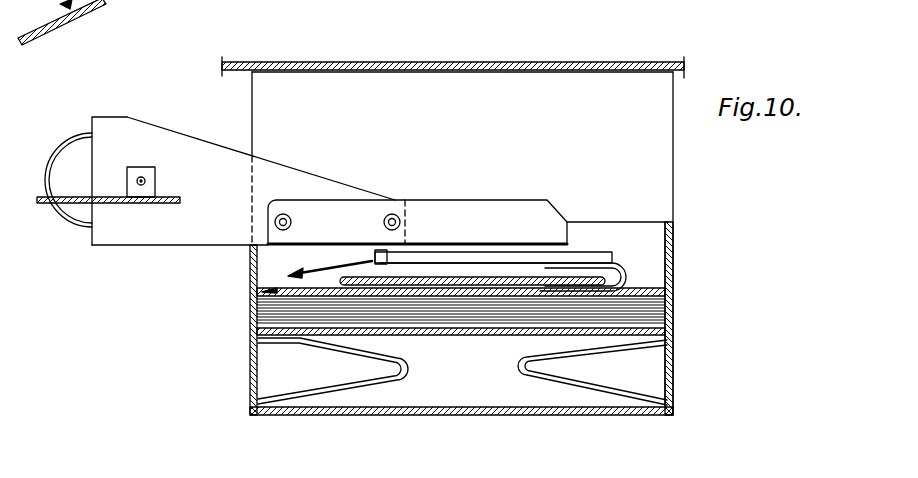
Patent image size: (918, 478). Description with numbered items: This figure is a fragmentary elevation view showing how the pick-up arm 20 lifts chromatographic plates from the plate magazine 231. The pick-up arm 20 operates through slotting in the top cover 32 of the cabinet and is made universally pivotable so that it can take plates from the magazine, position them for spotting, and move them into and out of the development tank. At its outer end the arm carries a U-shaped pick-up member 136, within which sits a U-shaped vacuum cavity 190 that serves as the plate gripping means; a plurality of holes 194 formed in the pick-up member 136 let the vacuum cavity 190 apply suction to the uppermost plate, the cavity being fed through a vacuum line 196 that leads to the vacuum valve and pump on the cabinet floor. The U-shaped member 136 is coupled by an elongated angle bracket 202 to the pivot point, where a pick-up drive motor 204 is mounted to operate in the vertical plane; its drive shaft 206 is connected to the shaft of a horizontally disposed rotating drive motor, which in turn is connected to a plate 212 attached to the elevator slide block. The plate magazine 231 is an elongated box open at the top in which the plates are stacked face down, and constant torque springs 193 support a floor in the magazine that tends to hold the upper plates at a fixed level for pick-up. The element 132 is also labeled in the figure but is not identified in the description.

The pick-up arm 20 is at (346, 180).
The top cover 32 is at (562, 26).
The heating element 132 is at (648, 296).
The U-shaped pick-up member 136 is at (657, 213).
The U-shaped vacuum cavity 190 is at (462, 278).
The constant torque springs 193 is at (332, 393).
The holes 194 is at (585, 295).
The vacuum line 196 is at (318, 257).
The elongated angle bracket 202 is at (527, 218).
The pick-up drive motor 204 is at (75, 162).
The drive shaft 206 is at (141, 181).
The plate 212 is at (72, 225).
The plate magazine 231 is at (673, 233).